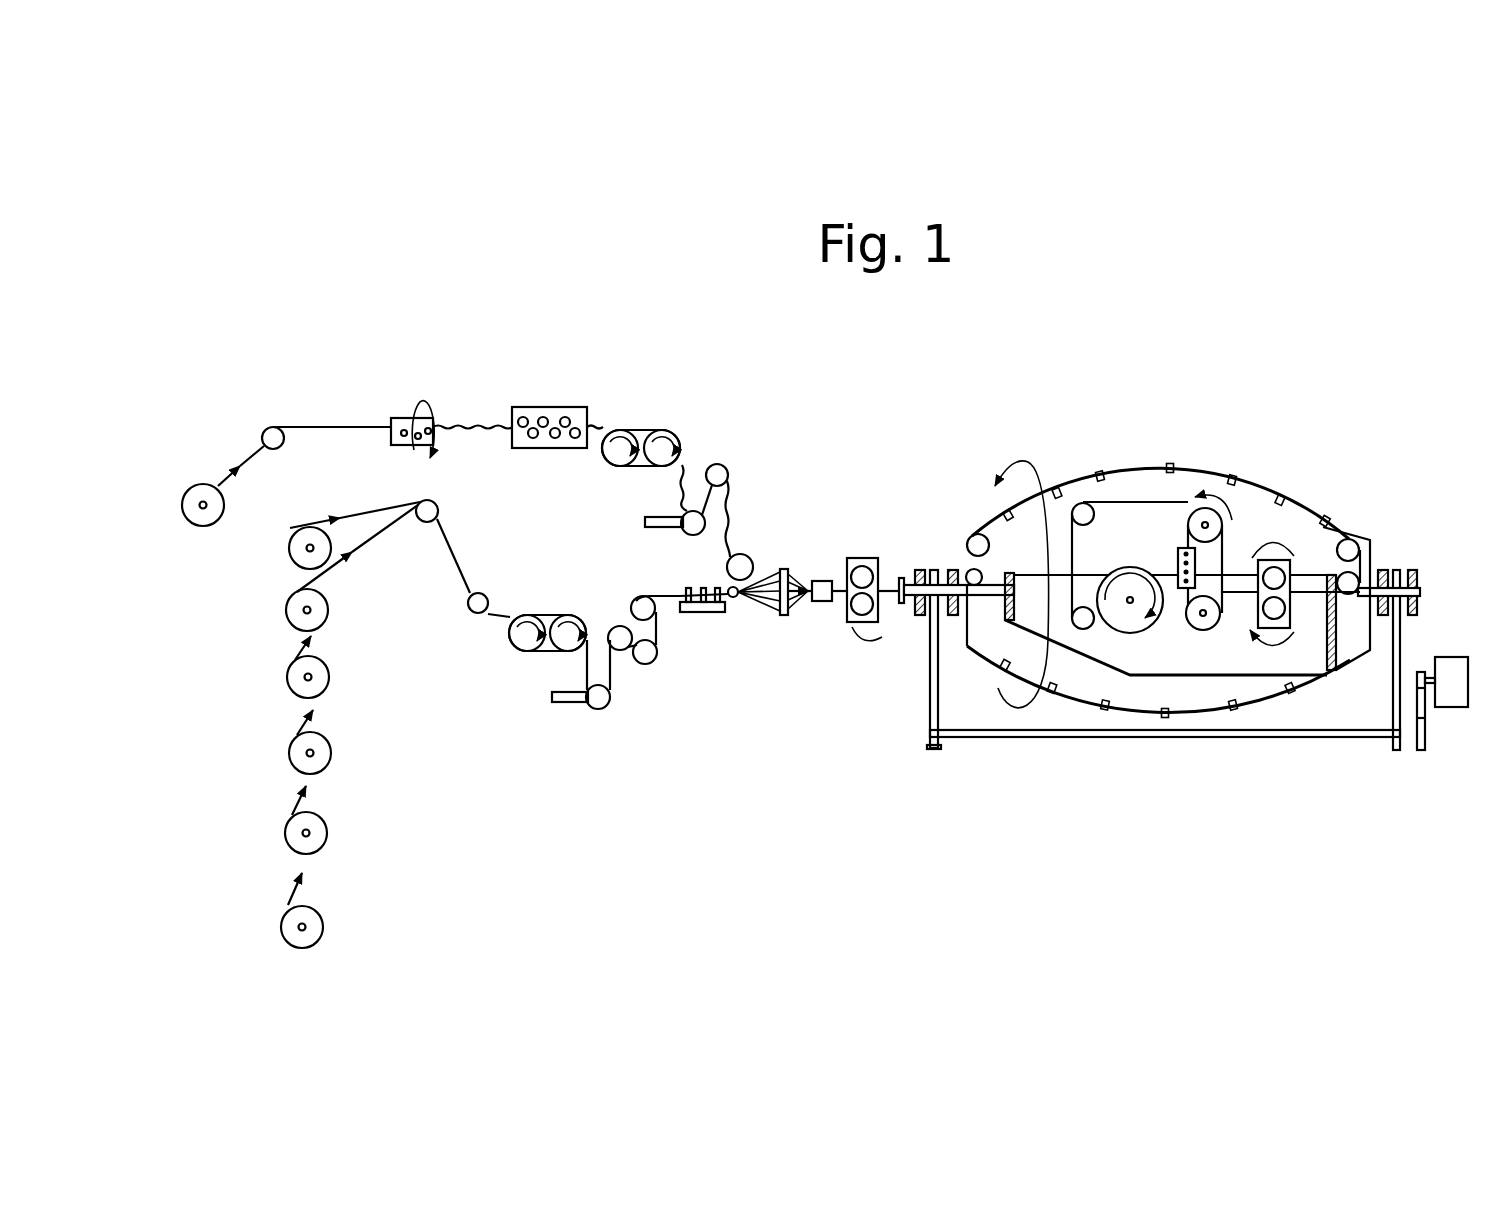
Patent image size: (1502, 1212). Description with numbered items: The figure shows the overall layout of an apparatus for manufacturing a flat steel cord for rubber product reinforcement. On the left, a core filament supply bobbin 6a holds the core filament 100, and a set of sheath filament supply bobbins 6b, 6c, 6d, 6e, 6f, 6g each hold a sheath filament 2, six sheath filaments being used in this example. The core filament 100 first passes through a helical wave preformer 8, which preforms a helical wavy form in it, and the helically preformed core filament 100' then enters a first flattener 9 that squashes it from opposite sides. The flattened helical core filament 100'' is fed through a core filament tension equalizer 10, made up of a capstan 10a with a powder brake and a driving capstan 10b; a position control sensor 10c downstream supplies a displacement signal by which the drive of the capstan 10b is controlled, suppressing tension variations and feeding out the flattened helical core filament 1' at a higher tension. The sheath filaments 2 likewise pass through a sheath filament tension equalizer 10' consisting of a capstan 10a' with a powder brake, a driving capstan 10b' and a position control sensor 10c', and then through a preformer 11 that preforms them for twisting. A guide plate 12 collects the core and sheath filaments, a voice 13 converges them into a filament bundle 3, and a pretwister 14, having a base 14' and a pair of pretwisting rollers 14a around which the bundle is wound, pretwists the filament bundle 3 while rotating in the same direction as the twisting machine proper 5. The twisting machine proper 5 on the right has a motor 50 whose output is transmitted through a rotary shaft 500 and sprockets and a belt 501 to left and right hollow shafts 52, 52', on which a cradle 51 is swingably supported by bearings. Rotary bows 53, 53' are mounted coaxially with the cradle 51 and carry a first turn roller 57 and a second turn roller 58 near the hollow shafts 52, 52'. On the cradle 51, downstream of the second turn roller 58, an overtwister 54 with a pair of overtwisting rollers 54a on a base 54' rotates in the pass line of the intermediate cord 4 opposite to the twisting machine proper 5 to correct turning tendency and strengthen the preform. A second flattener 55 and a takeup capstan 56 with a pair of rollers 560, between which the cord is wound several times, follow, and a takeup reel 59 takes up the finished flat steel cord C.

The core filament 100 is at (305, 426).
The helical wave preformer 8 is at (406, 412).
The helically preformed core filament 100' is at (476, 379).
The first flattener 9 is at (561, 405).
The flattened helical core filament 100'' is at (624, 360).
The core filament tension equalizer 10 is at (701, 398).
The capstan with a powder brake 10a is at (650, 398).
The driving capstan 10b is at (722, 414).
The position control sensor 10c is at (659, 520).
The flattened helical core filament 1' is at (734, 507).
The sheath filaments 2 is at (350, 518).
The core filament supply bobbin 6a is at (197, 520).
The sheath filament supply bobbin 6b is at (318, 546).
The sheath filament supply bobbin 6c is at (325, 612).
The sheath filament supply bobbin 6d is at (330, 676).
The sheath filament supply bobbin 6e is at (332, 752).
The sheath filament supply bobbin 6f is at (328, 833).
The sheath filament supply bobbin 6g is at (323, 927).
The sheath filament tension equalizer 10' is at (549, 630).
The capstan with a powder brake 10a' is at (545, 589).
The driving capstan 10b' is at (586, 607).
The position control sensor 10c' is at (604, 695).
The preformer 11 is at (702, 611).
The filament bundle 3 is at (820, 626).
The guide plate 12 is at (785, 572).
The voice 13 is at (822, 581).
The pretwister 14 is at (868, 598).
The pretwisting rollers 14a is at (856, 623).
The base 14' is at (870, 495).
The hollow shaft 52 is at (924, 662).
The hollow shaft 52' is at (1399, 550).
The first turn roller 57 is at (970, 568).
The flat steel cord C is at (1122, 503).
The rotary bow 53 is at (1160, 442).
The rotary bow 53' is at (1158, 745).
The rollers 560 is at (1187, 548).
The takeup capstan 56 is at (1218, 505).
The twisting machine proper 5 is at (1258, 470).
The base 54' is at (1281, 480).
The overtwister 54 is at (1304, 649).
The overtwisting rollers 54a is at (1214, 630).
The second turn roller 58 is at (1357, 545).
The sprockets and belt 501 is at (932, 695).
The rotary shaft 500 is at (990, 738).
The takeup reel 59 is at (1048, 692).
The second flattener 55 is at (1123, 626).
The cradle 51 is at (1275, 630).
The intermediate cord 4 is at (1298, 580).
The motor 50 is at (1452, 700).